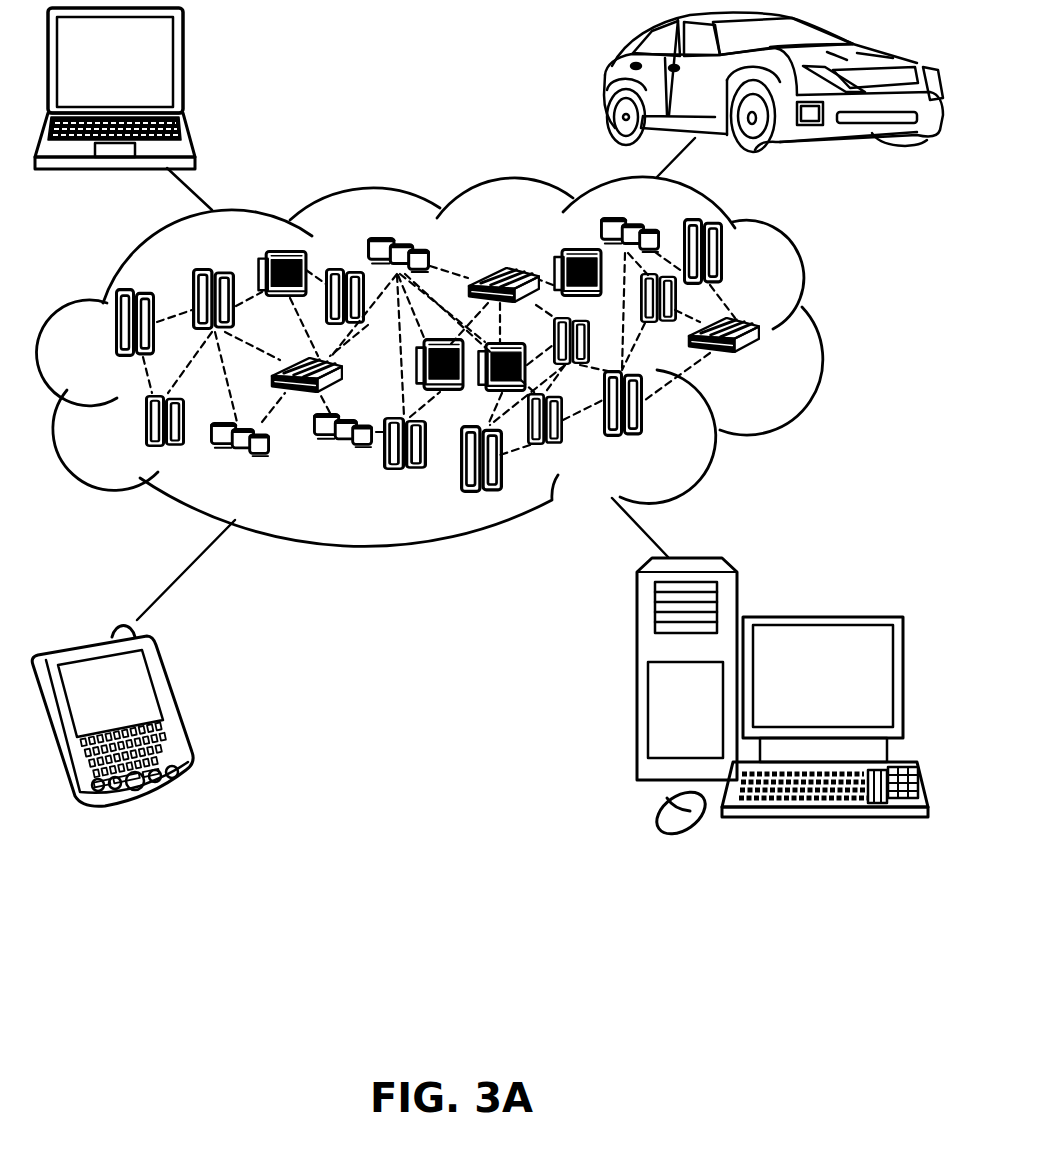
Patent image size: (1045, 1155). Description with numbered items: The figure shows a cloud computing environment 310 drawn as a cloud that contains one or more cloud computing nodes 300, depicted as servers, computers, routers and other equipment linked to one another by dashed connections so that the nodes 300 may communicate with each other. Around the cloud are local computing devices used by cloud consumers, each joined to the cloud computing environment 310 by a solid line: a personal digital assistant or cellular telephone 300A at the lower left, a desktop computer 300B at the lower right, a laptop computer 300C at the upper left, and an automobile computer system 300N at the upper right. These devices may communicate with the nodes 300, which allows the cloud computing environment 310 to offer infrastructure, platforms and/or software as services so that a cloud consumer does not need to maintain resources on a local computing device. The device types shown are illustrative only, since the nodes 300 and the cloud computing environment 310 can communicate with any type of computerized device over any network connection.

The cloud computing nodes 300 is at (773, 370).
The cloud computing environment 310 is at (820, 336).
The personal digital assistant (PDA) or cellular telephone 300A is at (172, 708).
The desktop computer 300B is at (821, 617).
The laptop computer 300C is at (183, 71).
The automobile computer system 300N is at (604, 84).